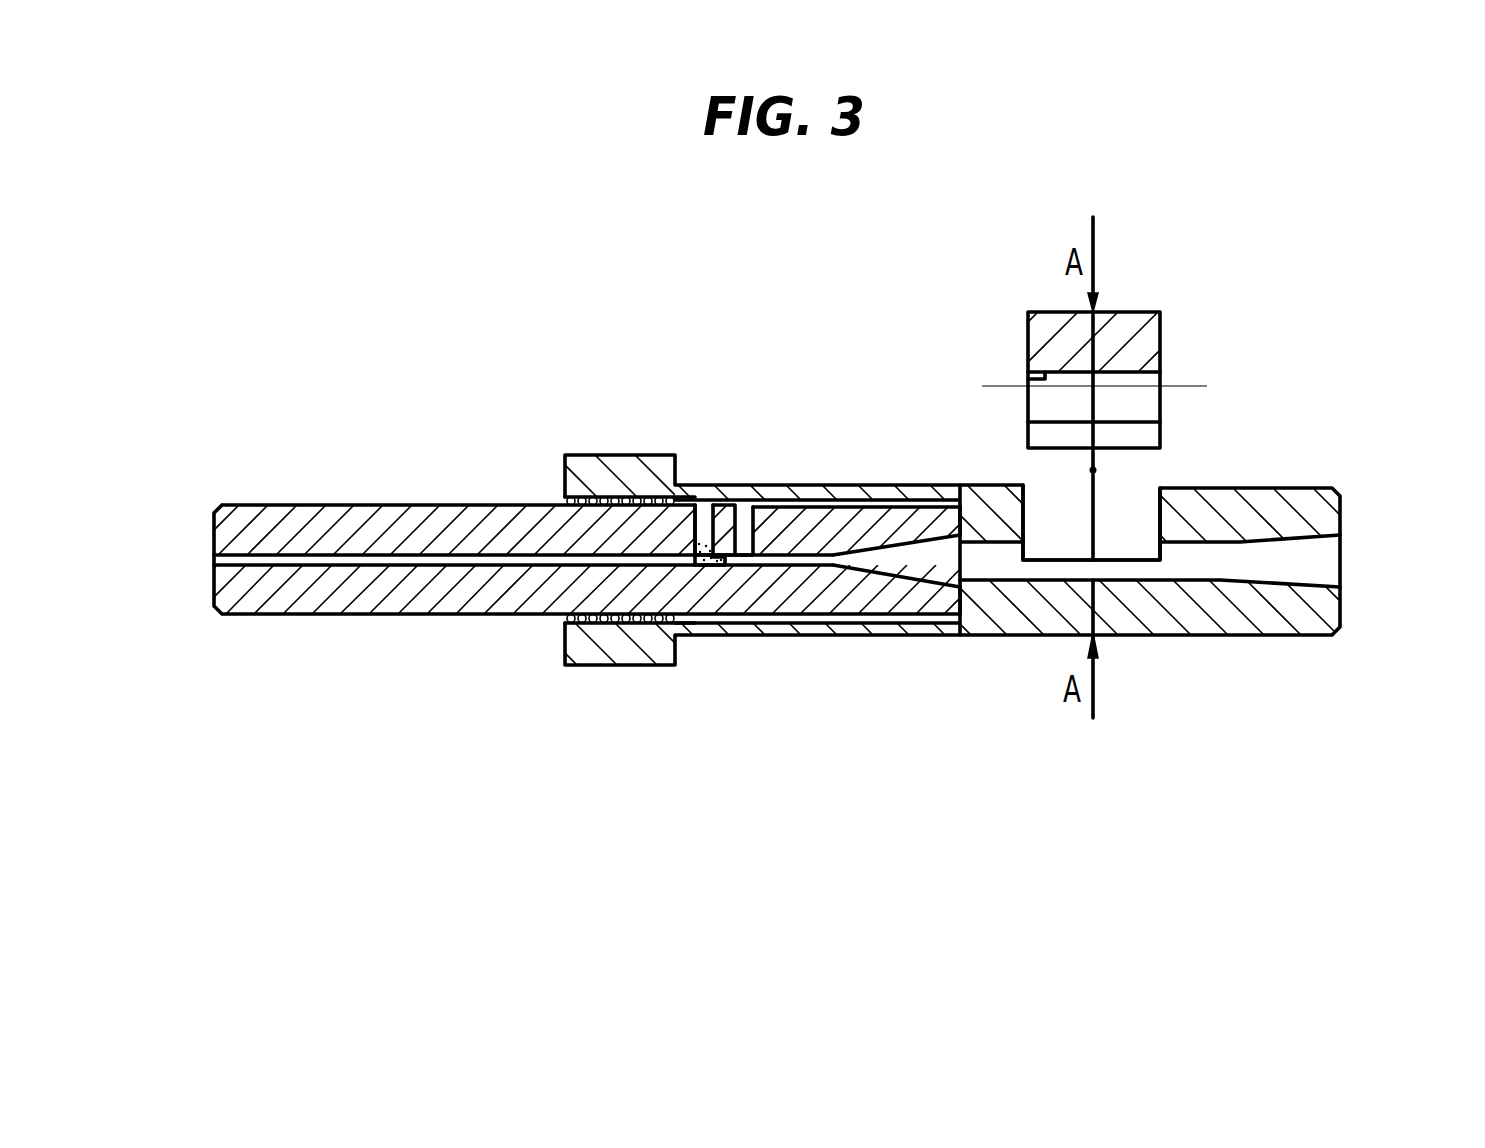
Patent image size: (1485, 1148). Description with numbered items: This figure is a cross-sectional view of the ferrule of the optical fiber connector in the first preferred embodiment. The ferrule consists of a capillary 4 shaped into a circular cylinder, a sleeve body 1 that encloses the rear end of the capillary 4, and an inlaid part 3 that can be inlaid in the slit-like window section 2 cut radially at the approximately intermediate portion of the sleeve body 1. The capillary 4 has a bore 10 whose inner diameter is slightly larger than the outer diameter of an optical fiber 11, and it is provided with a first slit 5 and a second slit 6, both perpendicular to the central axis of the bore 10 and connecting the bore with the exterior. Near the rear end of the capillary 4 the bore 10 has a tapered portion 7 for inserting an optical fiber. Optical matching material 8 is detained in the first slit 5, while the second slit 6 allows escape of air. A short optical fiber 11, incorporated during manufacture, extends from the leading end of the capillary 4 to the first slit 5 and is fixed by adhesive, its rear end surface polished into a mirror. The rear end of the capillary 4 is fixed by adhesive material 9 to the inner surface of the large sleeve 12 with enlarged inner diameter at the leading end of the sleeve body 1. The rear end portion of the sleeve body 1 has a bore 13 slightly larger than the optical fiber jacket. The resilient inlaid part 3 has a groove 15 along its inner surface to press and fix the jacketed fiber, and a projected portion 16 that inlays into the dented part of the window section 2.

The sleeve body 1 is at (1023, 632).
The window section 2 is at (1133, 490).
The inlaid part 3 is at (1142, 317).
The capillary 4 is at (311, 505).
The first slit 5 is at (703, 512).
The second slit 6 is at (743, 512).
The tapered portion 7 is at (907, 583).
The optical matching material 8 is at (707, 567).
The adhesive material 9 is at (565, 622).
The bore 10 is at (425, 567).
The optical fiber 11 is at (318, 558).
The large sleeve 12 is at (880, 495).
The bore 13 is at (1225, 583).
The groove 15 is at (1032, 378).
The projected portion 16 is at (1147, 435).